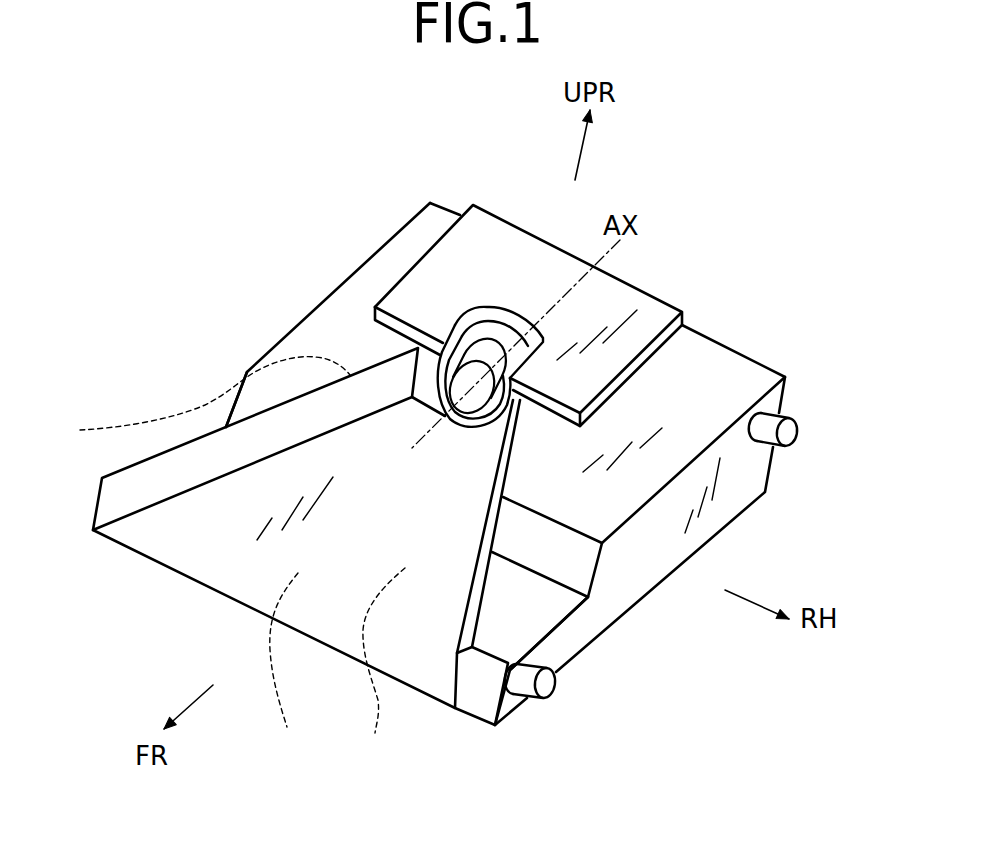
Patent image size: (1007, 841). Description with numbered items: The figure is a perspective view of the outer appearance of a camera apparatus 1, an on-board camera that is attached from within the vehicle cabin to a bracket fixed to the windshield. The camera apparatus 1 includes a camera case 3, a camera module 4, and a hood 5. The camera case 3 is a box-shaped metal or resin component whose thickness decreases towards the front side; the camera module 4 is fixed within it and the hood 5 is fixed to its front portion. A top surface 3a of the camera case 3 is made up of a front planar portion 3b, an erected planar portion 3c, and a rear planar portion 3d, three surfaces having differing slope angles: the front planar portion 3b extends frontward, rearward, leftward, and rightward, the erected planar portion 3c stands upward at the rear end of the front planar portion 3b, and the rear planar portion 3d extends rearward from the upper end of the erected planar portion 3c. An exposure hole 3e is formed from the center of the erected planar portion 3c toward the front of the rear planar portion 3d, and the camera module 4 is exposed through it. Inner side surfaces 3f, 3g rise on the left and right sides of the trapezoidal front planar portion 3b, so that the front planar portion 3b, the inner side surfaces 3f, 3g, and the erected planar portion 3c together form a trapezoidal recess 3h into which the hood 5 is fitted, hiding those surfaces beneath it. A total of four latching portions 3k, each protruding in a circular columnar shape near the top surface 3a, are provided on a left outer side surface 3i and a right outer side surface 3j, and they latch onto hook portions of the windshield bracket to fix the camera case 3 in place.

The camera apparatus 1 is at (719, 209).
The camera case 3 is at (808, 402).
The top surface 3a is at (622, 437).
The front planar portion 3b is at (383, 670).
The erected planar portion 3c is at (498, 433).
The rear planar portion 3d is at (620, 303).
The exposure hole 3e is at (492, 333).
The inner side surface 3f is at (202, 401).
The inner side surface 3g is at (516, 440).
The trapezoidal recess 3h is at (288, 668).
The left outer side surface 3i is at (620, 593).
The right outer side surface 3j is at (257, 355).
The latching portion 3k is at (787, 432).
The camera module 4 is at (438, 369).
The hood 5 is at (187, 578).